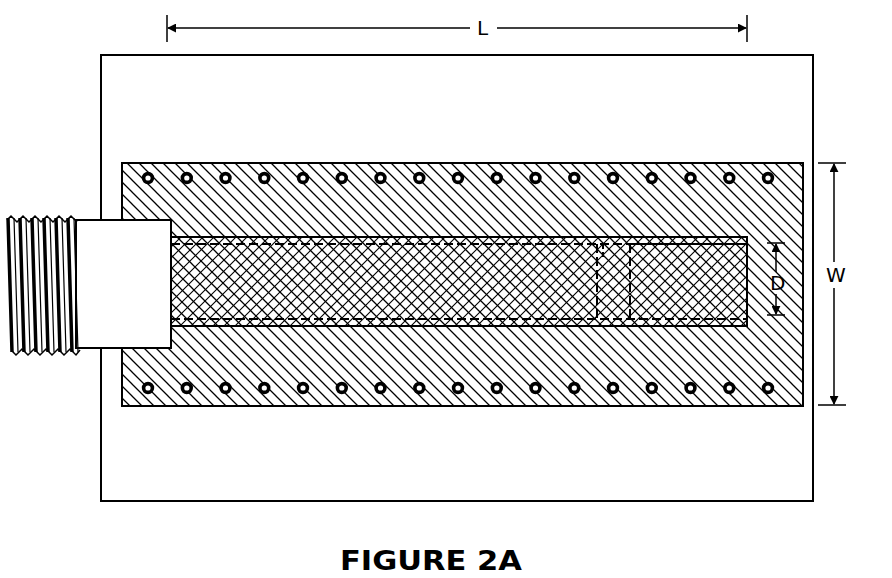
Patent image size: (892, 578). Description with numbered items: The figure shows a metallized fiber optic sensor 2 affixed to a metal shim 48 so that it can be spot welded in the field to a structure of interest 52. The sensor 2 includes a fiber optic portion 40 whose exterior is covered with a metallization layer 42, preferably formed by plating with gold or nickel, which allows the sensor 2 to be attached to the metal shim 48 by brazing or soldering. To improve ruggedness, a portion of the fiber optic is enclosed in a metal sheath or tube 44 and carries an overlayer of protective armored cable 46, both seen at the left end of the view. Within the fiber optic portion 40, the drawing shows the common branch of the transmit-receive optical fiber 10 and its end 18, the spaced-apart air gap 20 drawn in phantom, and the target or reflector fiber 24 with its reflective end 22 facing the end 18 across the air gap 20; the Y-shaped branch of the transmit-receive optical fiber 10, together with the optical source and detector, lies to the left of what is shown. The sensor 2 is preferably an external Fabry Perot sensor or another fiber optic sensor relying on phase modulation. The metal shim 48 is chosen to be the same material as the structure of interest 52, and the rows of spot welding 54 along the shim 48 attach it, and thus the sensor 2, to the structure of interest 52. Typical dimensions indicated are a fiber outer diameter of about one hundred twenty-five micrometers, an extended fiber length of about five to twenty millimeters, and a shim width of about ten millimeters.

The fiber optic sensor 2 is at (368, 194).
The transmit-receive optical fiber 10 is at (459, 281).
The end of transmit-receive optical fiber 18 is at (596, 306).
The air gap 20 is at (606, 252).
The reflective end 22 is at (652, 281).
The reflector fiber 24 is at (688, 281).
The fiber optic portion 40 is at (652, 248).
The metallization layer 42 is at (738, 268).
The metal sheath or tube 44 is at (108, 225).
The protective armored cable 46 is at (20, 350).
The metal shim 48 is at (207, 180).
The structure of interest 52 is at (121, 98).
The spot welding 54 is at (144, 388).